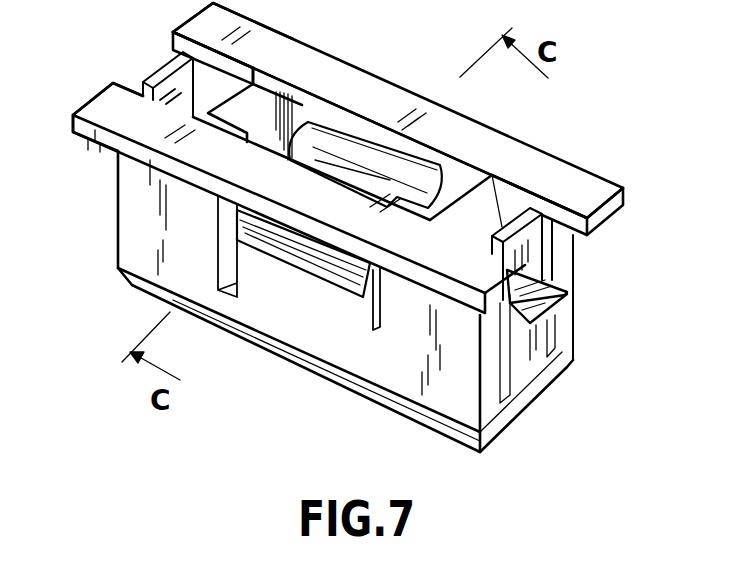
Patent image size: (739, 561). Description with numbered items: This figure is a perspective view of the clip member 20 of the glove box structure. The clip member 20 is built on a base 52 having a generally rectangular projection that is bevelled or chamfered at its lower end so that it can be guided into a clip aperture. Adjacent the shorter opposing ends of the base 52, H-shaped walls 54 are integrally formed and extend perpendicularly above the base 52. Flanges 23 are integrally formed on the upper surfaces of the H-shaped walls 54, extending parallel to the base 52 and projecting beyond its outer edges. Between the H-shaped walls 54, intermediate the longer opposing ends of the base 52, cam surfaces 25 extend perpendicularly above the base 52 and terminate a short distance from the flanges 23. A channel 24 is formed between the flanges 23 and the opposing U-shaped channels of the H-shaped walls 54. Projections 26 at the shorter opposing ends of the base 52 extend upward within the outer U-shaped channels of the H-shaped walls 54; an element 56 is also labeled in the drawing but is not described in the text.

The clip member 20 is at (491, 116).
The flanges 23 is at (100, 100).
The channel 24 is at (273, 92).
The cam surfaces 25 is at (343, 147).
The projections 26 is at (561, 293).
The base 52 is at (508, 417).
The H-shaped walls 54 is at (122, 198).
The end block 56 is at (513, 193).